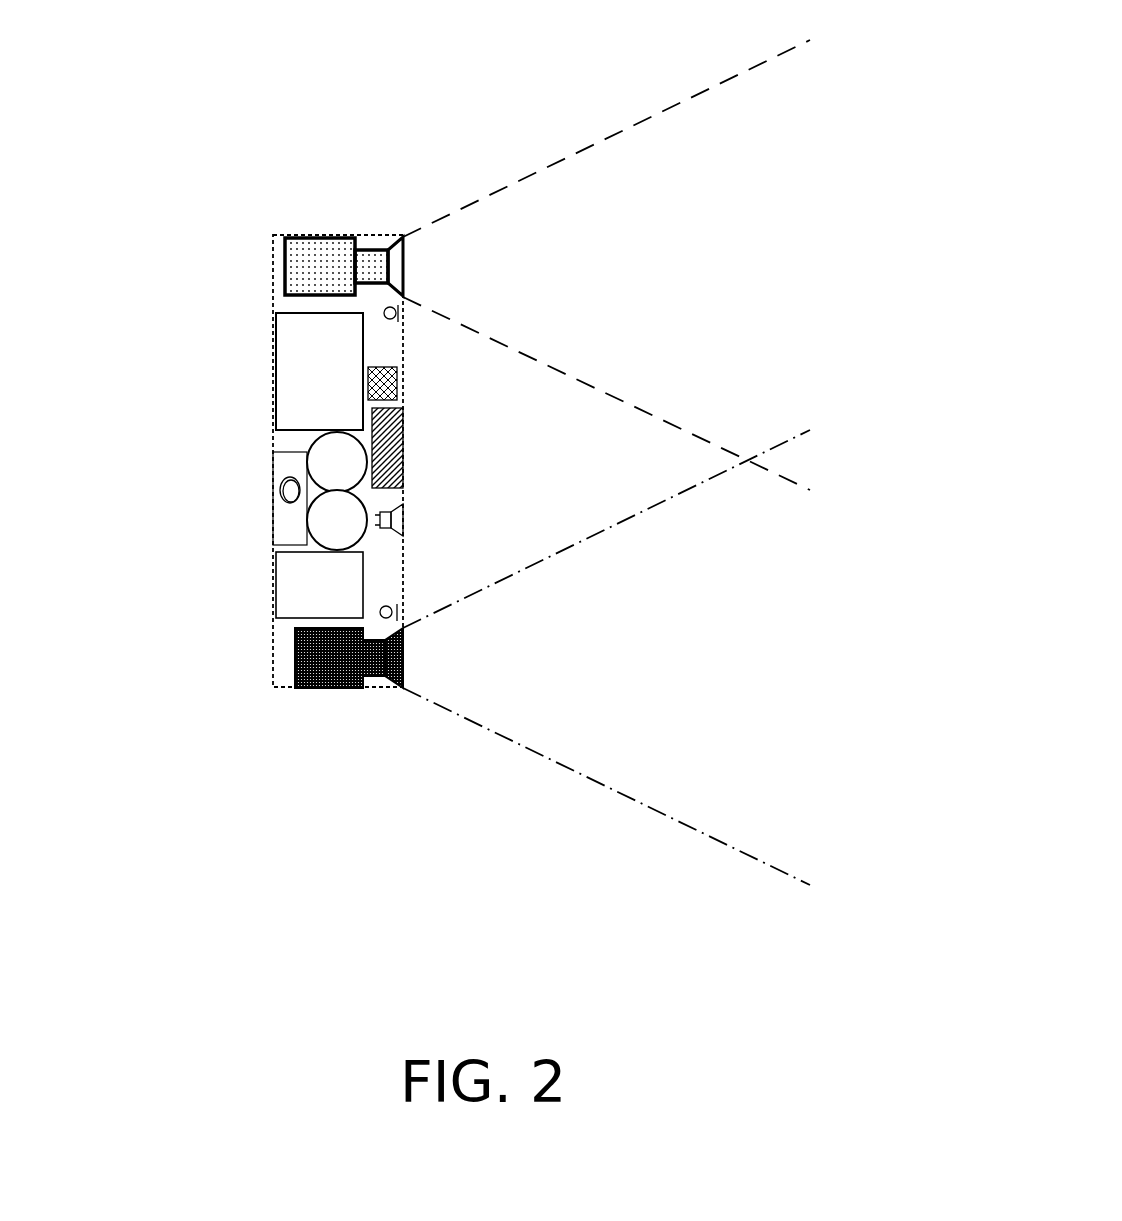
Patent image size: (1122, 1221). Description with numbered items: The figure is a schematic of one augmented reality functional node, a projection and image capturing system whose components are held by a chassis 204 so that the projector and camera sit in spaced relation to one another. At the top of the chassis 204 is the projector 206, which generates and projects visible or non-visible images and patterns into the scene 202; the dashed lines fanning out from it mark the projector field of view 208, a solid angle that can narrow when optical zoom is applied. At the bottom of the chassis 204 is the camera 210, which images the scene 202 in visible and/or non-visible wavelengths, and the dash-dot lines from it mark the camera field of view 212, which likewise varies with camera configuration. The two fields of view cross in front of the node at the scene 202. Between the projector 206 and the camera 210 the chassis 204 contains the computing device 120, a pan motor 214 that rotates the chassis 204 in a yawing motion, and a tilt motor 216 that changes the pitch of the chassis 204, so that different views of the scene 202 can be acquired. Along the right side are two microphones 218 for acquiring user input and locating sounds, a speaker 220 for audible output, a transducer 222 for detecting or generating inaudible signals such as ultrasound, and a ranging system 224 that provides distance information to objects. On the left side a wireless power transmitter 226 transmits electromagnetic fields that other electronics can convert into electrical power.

The computing device 120 is at (320, 372).
The scene 202 is at (848, 461).
The chassis 204 is at (339, 234).
The projector 206 is at (318, 267).
The projector field of view 208 is at (606, 128).
The camera 210 is at (323, 663).
The camera field of view 212 is at (558, 772).
The pan motor 214 is at (312, 444).
The tilt motor 216 is at (309, 521).
The microphones 218 is at (394, 309).
The speaker 220 is at (403, 520).
The transducer 222 is at (397, 367).
The ranging system 224 is at (395, 443).
The wireless power transmitter 226 is at (279, 492).